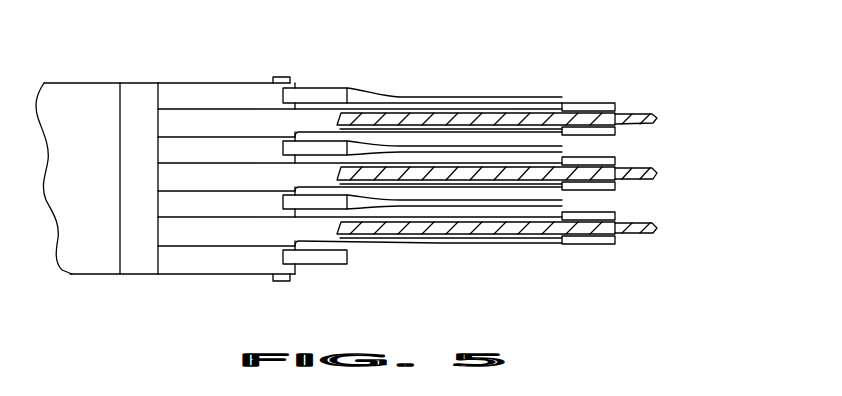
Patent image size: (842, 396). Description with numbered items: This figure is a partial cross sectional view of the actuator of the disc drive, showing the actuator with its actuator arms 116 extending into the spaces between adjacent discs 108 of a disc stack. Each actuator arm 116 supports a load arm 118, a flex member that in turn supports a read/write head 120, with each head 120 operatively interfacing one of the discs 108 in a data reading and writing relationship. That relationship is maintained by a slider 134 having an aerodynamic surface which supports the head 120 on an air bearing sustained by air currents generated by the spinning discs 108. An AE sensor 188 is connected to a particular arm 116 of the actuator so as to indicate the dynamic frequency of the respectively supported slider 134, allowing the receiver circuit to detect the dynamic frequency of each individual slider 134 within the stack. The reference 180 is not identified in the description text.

The base block 180 is at (131, 83).
The actuator arm 116 is at (227, 83).
The AE sensor 188 is at (288, 77).
The disc 108 is at (337, 113).
The load arm 118 is at (479, 100).
The read/write head 120 is at (592, 103).
The slider 134 is at (618, 127).